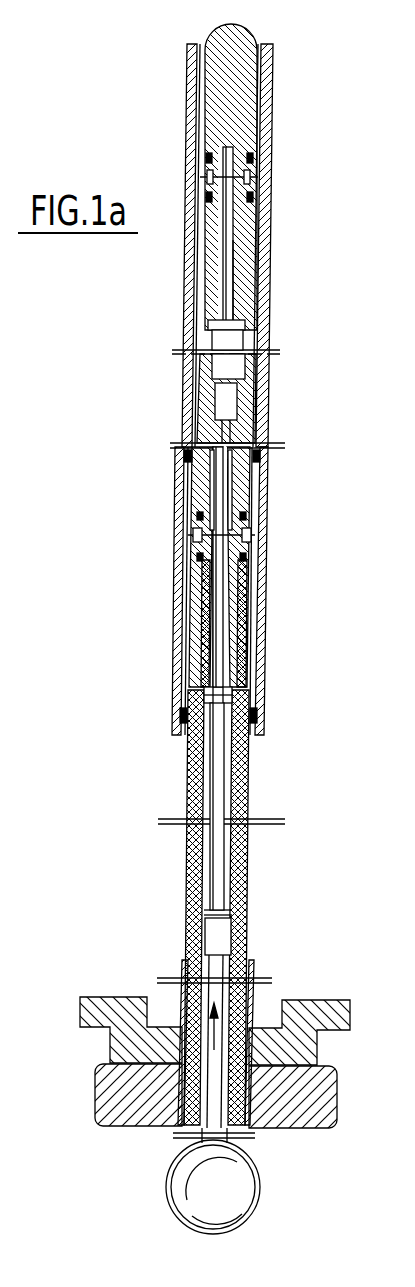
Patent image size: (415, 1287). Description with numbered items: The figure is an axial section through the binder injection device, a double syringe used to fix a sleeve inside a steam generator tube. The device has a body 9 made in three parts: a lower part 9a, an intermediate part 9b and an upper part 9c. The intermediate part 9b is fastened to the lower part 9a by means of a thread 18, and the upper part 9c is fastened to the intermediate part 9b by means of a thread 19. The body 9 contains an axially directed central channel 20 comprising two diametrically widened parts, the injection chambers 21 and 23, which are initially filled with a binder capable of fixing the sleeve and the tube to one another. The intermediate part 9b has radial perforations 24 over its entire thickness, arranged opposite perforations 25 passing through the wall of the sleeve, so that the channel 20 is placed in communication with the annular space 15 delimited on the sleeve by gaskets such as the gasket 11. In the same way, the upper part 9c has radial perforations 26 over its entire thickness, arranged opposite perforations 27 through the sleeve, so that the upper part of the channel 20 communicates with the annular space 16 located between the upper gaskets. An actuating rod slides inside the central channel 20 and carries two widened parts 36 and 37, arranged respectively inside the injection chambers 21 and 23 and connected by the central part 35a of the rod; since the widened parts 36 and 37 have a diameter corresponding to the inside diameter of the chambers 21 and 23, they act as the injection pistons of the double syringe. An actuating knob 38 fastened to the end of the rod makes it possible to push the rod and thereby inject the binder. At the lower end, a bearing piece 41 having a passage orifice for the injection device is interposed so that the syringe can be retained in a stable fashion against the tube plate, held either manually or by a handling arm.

The body 9 is at (240, 883).
The lower part 9a is at (245, 963).
The intermediate part 9b is at (243, 603).
The upper part 9c is at (237, 125).
The gasket 11 is at (257, 717).
The annular zone 15 is at (187, 657).
The annular zone 16 is at (205, 105).
The thread 18 is at (250, 662).
The thread 19 is at (252, 302).
The central channel 20 is at (231, 230).
The injection chamber 21 is at (232, 767).
The injection chamber 23 is at (233, 372).
The radial perforations 24 is at (242, 537).
The perforations 25 is at (192, 535).
The radial perforations 26 is at (255, 172).
The perforations 27 is at (203, 177).
The central part of the rod 35a is at (220, 763).
The widened part 36 is at (222, 937).
The widened part 37 is at (233, 405).
The actuating knob 38 is at (245, 1188).
The bearing piece 41 is at (90, 1008).